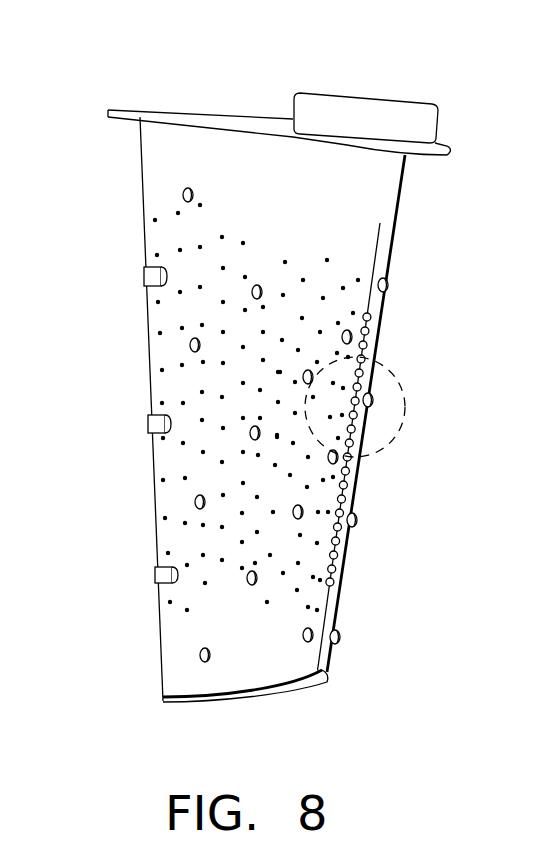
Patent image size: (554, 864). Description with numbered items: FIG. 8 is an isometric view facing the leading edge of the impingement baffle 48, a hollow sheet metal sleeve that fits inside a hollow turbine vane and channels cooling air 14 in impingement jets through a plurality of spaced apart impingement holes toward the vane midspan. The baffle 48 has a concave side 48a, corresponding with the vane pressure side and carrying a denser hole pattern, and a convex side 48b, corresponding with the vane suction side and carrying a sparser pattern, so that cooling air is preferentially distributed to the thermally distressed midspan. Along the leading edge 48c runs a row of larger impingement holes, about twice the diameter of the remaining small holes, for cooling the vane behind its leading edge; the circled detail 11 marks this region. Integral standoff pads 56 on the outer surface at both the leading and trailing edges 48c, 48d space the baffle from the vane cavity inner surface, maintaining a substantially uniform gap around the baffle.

The cooling air 14 is at (372, 0).
The impingement baffle 48 is at (253, 409).
The concave side of the baffle 48a is at (222, 618).
The convex side of the baffle 48b is at (340, 598).
The leading edge of the baffle 48c is at (380, 243).
The trailing edge of the baffle 48d is at (148, 316).
The standoff pads 56 is at (144, 277).
The detail region circle 11 is at (398, 369).